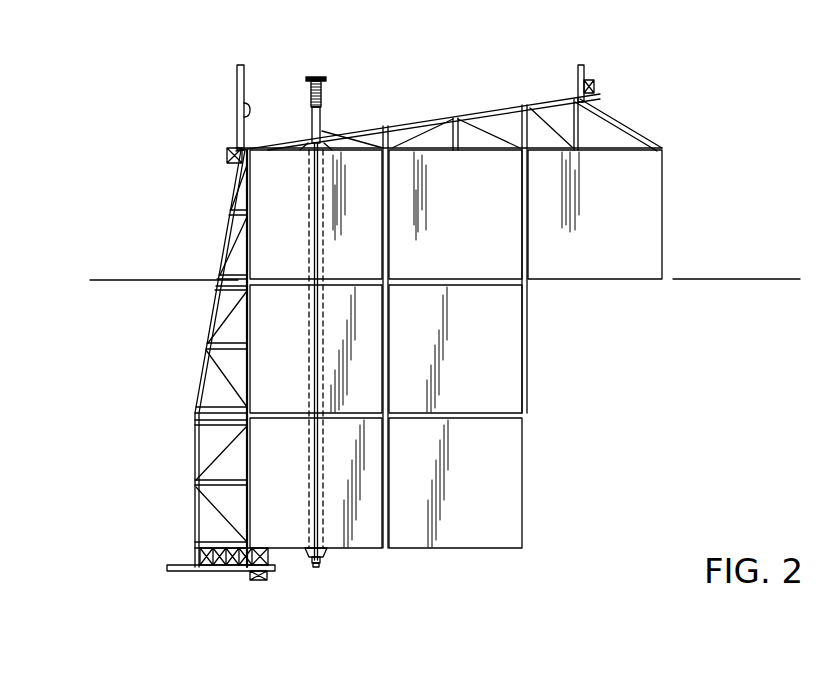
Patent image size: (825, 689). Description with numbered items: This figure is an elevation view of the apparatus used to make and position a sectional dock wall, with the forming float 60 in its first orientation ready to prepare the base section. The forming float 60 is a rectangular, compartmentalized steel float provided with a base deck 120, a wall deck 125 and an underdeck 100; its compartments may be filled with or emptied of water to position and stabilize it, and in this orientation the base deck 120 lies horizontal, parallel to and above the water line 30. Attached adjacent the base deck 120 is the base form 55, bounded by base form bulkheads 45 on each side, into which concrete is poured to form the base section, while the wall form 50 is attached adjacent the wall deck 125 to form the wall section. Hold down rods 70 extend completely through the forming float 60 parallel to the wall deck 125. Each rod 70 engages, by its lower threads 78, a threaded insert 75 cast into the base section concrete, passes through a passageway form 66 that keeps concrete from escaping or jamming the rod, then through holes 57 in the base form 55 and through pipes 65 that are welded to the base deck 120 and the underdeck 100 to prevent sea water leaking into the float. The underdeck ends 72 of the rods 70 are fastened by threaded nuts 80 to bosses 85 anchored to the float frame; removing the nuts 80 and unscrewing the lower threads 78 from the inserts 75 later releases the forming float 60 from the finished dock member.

The water line 30 is at (160, 279).
The base form bulkheads 45 is at (239, 104).
The wall form 50 is at (192, 466).
The base form 55 is at (586, 100).
The holes 57 is at (322, 131).
The forming float 60 is at (514, 340).
The pipes 65 is at (310, 357).
The passageway form 66 is at (313, 132).
The hold down rods 70 is at (320, 295).
The underdeck ends 72 is at (316, 566).
The threaded insert 75 is at (326, 79).
The lower threads 78 is at (308, 84).
The threaded nuts 80 is at (312, 557).
The bosses 85 is at (324, 557).
The underdeck 100 is at (434, 548).
The base deck 120 is at (470, 150).
The wall deck 125 is at (250, 435).